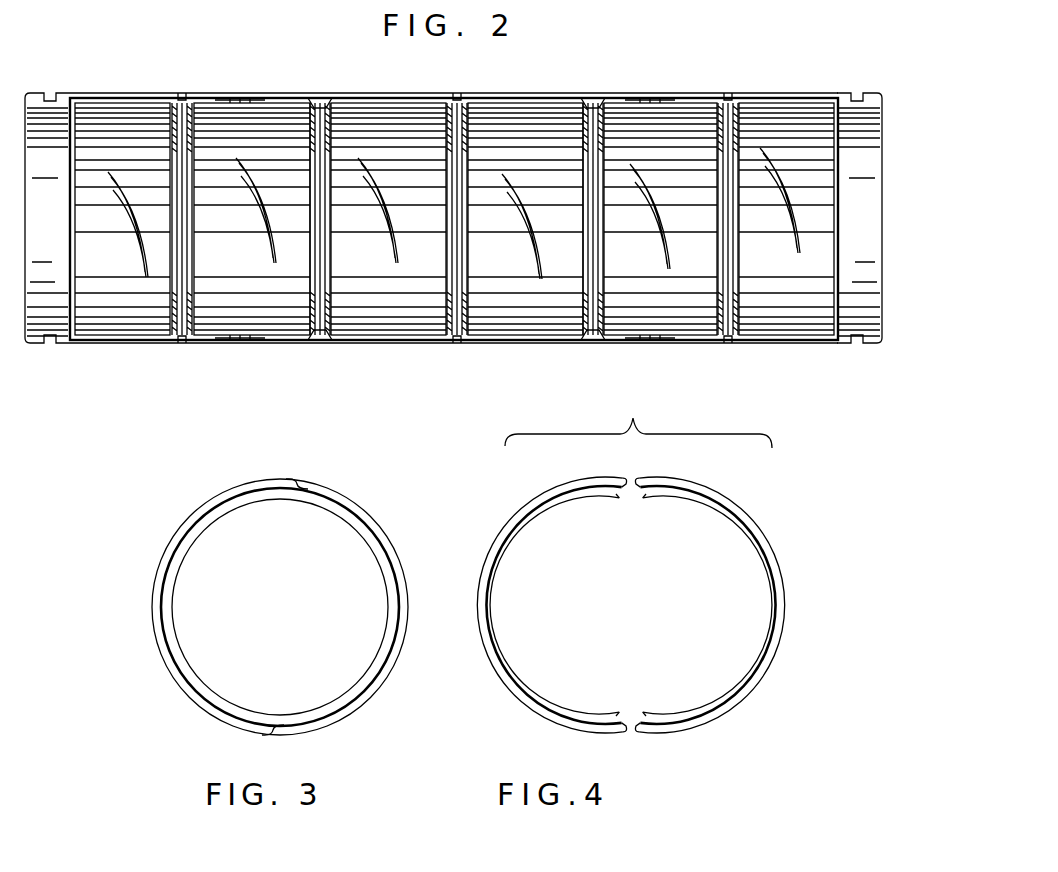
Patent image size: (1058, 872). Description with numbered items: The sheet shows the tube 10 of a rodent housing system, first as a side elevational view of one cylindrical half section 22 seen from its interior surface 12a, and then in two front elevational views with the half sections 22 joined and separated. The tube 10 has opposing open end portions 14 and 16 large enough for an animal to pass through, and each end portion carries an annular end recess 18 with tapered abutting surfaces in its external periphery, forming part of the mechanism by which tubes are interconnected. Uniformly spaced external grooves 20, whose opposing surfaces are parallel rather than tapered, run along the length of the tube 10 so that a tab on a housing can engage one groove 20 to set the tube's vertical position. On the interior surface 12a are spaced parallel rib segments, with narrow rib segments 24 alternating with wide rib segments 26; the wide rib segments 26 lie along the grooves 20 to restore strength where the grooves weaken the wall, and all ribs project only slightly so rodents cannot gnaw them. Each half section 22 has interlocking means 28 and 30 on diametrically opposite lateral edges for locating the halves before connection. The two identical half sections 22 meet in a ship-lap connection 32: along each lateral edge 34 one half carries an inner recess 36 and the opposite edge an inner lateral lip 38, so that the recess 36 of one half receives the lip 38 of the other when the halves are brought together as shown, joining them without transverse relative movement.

In FIG. 3, the tube 10 is at (172, 749).
In FIG. 2, the interior surface 12a is at (371, 328).
In FIG. 2, the open end portion 14 is at (112, 97).
In FIG. 2, the open end portion 16 is at (788, 96).
In FIG. 2, the annular end recess 18 is at (35, 352).
In FIG. 2, the groove 20 is at (184, 94).
In FIG. 2, the half section 22 is at (77, 392).
In FIG. 3, the half section 22 is at (171, 541).
In FIG. 4, the half section 22 is at (497, 678).
In FIG. 2, the narrow rib segment 24 is at (576, 140).
In FIG. 3, the narrow rib segment 24 is at (183, 664).
In FIG. 4, the narrow rib segment 24 is at (495, 602).
In FIG. 2, the wide rib segment 26 is at (443, 147).
In FIG. 2, the interlocking means 28 is at (240, 80).
In FIG. 2, the interlocking means 30 is at (647, 363).
In FIG. 4, the interlocking means 30 is at (638, 425).
In FIG. 3, the ship-lap connection 32 is at (295, 470).
In FIG. 4, the lateral edge 34 is at (604, 480).
In FIG. 4, the inner recess 36 is at (677, 498).
In FIG. 4, the inner lateral lip 38 is at (621, 500).